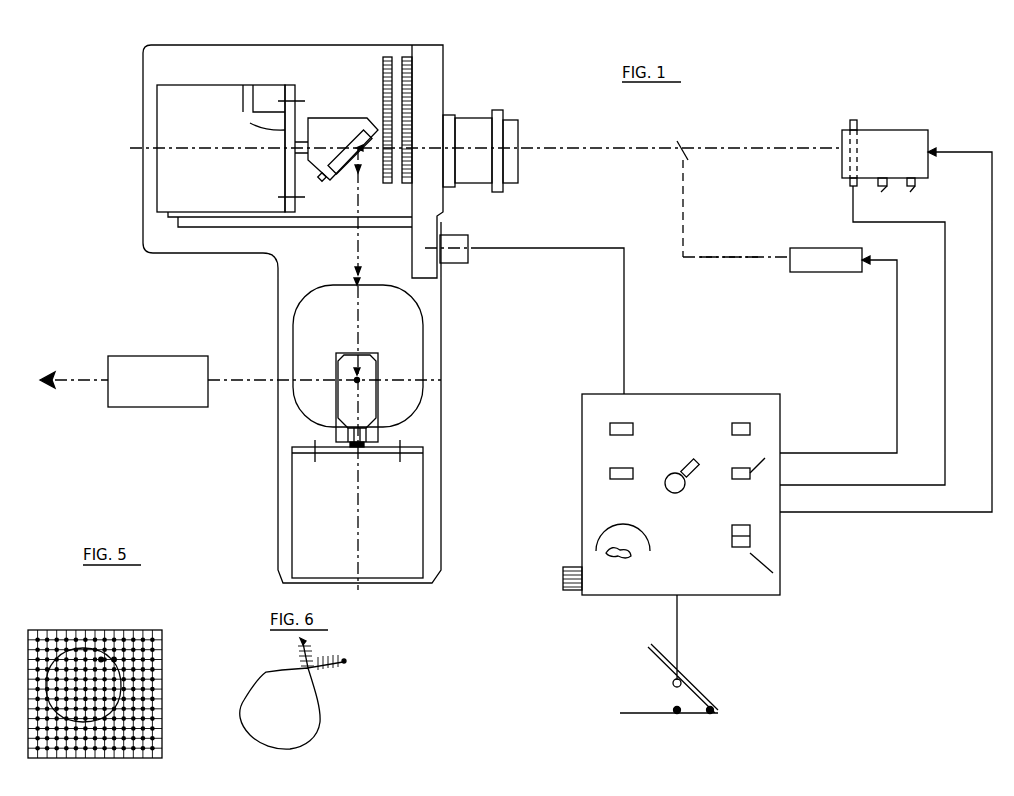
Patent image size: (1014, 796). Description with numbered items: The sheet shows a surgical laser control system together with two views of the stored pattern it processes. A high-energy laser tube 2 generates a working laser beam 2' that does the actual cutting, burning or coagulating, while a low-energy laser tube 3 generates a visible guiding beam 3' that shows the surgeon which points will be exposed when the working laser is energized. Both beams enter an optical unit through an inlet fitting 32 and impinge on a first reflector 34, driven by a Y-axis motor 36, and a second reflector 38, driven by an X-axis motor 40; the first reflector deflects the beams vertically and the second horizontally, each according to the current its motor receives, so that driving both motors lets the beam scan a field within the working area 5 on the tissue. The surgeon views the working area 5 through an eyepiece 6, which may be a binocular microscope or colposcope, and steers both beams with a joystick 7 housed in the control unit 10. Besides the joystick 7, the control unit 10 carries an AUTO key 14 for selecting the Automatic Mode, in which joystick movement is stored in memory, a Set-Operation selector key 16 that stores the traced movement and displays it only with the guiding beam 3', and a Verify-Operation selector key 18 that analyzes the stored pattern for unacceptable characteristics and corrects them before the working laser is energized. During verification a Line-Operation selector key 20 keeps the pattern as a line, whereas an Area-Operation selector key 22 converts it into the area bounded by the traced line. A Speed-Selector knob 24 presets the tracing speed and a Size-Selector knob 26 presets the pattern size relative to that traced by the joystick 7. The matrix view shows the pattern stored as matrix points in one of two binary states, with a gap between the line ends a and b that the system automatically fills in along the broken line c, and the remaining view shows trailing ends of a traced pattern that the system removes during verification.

In FIG. 1, the high-energy laser tube 2 is at (885, 156).
In FIG. 1, the working laser beam 2' is at (695, 125).
In FIG. 1, the low-energy laser tube 3 is at (826, 260).
In FIG. 1, the guiding beam 3' is at (730, 237).
In FIG. 1, the working area 5 is at (360, 380).
In FIG. 1, the eyepiece 6 is at (157, 360).
In FIG. 1, the joystick 7 is at (685, 465).
In FIG. 1, the control unit 10 is at (727, 400).
In FIG. 1, the AUTO key 14 is at (752, 428).
In FIG. 1, the Set-Operation selector key 16 is at (610, 428).
In FIG. 1, the Verify-Operation selector key 18 is at (610, 472).
In FIG. 1, the Line-Operation selector key 20 is at (770, 582).
In FIG. 1, the Area-Operation selector key 22 is at (750, 530).
In FIG. 1, the Speed-Selector knob 24 is at (600, 548).
In FIG. 1, the Size-Selector knob 26 is at (562, 591).
In FIG. 1, the inlet fitting 32 is at (512, 124).
In FIG. 1, the first reflector 34 is at (357, 128).
In FIG. 1, the Y-axis motor 36 is at (195, 92).
In FIG. 1, the second reflector 38 is at (373, 398).
In FIG. 1, the X-axis motor 40 is at (415, 503).
In FIG. 5, the end of traced line a is at (80, 648).
In FIG. 5, the end of traced line b is at (114, 655).
In FIG. 5, the broken-line gap fill c is at (101, 655).